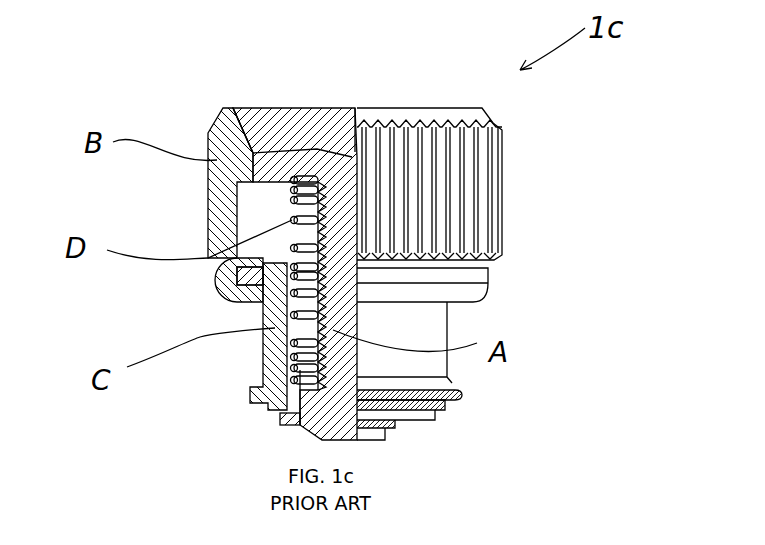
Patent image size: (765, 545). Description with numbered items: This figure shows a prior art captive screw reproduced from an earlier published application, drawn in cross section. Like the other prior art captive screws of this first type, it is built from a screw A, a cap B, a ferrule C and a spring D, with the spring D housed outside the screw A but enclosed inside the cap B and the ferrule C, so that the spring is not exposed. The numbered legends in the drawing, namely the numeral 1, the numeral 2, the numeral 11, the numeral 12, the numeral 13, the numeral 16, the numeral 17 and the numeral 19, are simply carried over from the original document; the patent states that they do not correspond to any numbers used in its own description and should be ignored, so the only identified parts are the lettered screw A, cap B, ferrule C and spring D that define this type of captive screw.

The spring guide sleeve 1 is at (265, 348).
The spring seat 2 is at (280, 415).
The threaded body 11 is at (280, 127).
The groove 12 is at (253, 150).
The cap nut 13 is at (210, 195).
The sealing ring 16 is at (230, 303).
The coil spring 17 is at (237, 200).
The support ring 19 is at (240, 281).